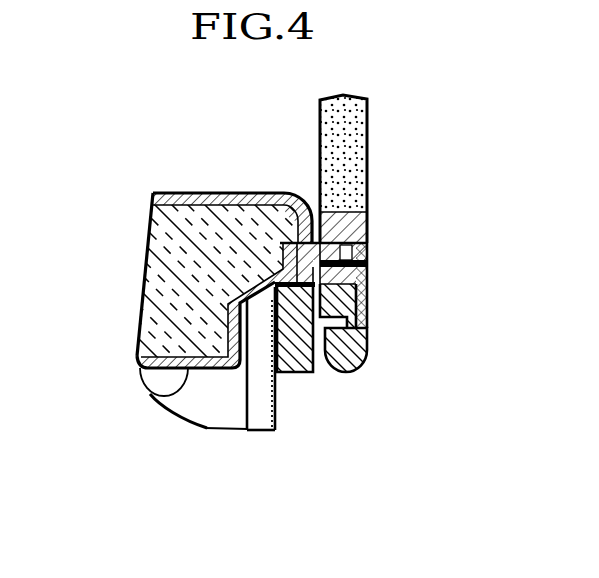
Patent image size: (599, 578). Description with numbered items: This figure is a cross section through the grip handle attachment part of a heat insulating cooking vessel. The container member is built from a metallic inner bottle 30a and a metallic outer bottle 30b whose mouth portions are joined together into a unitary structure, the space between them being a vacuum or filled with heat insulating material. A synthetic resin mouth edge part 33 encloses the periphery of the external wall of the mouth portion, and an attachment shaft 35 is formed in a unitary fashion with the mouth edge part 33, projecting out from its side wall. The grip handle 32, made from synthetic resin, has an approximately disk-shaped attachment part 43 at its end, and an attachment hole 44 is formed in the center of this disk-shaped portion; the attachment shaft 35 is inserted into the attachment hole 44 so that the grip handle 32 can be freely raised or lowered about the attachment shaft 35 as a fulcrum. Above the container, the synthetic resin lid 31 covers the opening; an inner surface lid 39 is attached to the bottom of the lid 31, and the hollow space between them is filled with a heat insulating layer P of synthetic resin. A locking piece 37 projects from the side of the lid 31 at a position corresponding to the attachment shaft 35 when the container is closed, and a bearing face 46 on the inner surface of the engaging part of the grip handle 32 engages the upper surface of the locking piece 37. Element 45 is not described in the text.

The lid 31 is at (193, 193).
The heat insulating layer P is at (258, 232).
The grip handle 32 is at (347, 167).
The locking piece 37 is at (367, 247).
The attachment shaft 35 is at (370, 278).
The attachment hole 44 is at (370, 297).
The attachment part 43 is at (372, 350).
The clip leg 45 is at (350, 372).
The bearing face 46 is at (318, 330).
The mouth edge part 33 is at (287, 385).
The metallic inner bottle 30a is at (243, 405).
The metallic outer bottle 30b is at (278, 412).
The inner surface lid 39 is at (150, 398).